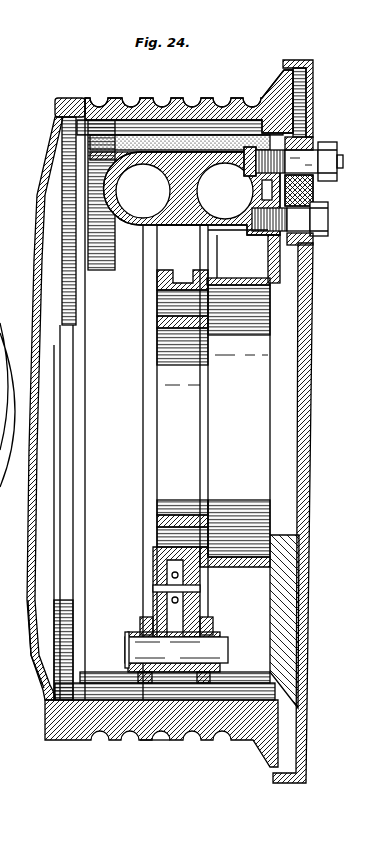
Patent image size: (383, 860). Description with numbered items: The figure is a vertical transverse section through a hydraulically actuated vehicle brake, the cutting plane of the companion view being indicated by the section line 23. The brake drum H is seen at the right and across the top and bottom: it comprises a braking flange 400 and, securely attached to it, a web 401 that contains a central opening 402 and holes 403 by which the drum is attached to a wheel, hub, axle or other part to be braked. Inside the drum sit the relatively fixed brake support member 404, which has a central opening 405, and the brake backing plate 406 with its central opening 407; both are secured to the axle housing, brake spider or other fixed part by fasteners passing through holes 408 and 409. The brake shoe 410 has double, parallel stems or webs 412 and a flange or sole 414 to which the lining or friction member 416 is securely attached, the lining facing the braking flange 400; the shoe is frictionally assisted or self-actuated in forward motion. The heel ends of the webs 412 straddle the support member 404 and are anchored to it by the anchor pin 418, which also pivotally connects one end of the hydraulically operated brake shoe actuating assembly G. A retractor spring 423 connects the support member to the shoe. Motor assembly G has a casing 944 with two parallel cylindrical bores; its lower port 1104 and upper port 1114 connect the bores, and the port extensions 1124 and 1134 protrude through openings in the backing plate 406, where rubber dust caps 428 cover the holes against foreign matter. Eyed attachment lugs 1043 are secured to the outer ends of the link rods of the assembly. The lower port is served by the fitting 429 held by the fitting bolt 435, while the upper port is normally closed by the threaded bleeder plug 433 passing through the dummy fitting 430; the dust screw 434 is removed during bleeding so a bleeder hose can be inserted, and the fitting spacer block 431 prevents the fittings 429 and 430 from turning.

The section line 23- 23 is at (45, 75).
The braking flange 400 is at (210, 743).
The web 401 is at (33, 651).
The central opening 402 is at (33, 477).
The holes 403 is at (36, 270).
The brake support member 404 is at (167, 324).
The central opening 405 is at (168, 462).
The brake backing plate 406 is at (314, 92).
The central opening 407 is at (203, 488).
The holes 408 is at (165, 314).
The holes 409 is at (213, 318).
The brake shoe 410 is at (85, 427).
The double parallel webs 412 is at (142, 621).
The flange or sole 414 is at (112, 152).
The lining or friction member 416 is at (212, 140).
The anchor pin 418 is at (125, 648).
The retractor spring 423 is at (180, 576).
The rubber dust caps 428 is at (281, 245).
The fitting 429 is at (302, 247).
The dummy fitting 430 is at (314, 139).
The fitting spacer block 431 is at (314, 192).
The threaded bleeder plug 433 is at (308, 157).
The dust screw 434 is at (338, 160).
The fitting bolt 435 is at (329, 220).
The casing 944 is at (201, 226).
The eyed attachment lugs 1043 is at (133, 633).
The lower fluid port 1104 is at (157, 218).
The upper fluid port 1114 is at (180, 163).
The port extension 1124 is at (257, 237).
The port extension 1134 is at (257, 148).
The hydraulically operated brake shoe actuating assembly G is at (183, 233).
The brake drum H is at (157, 748).